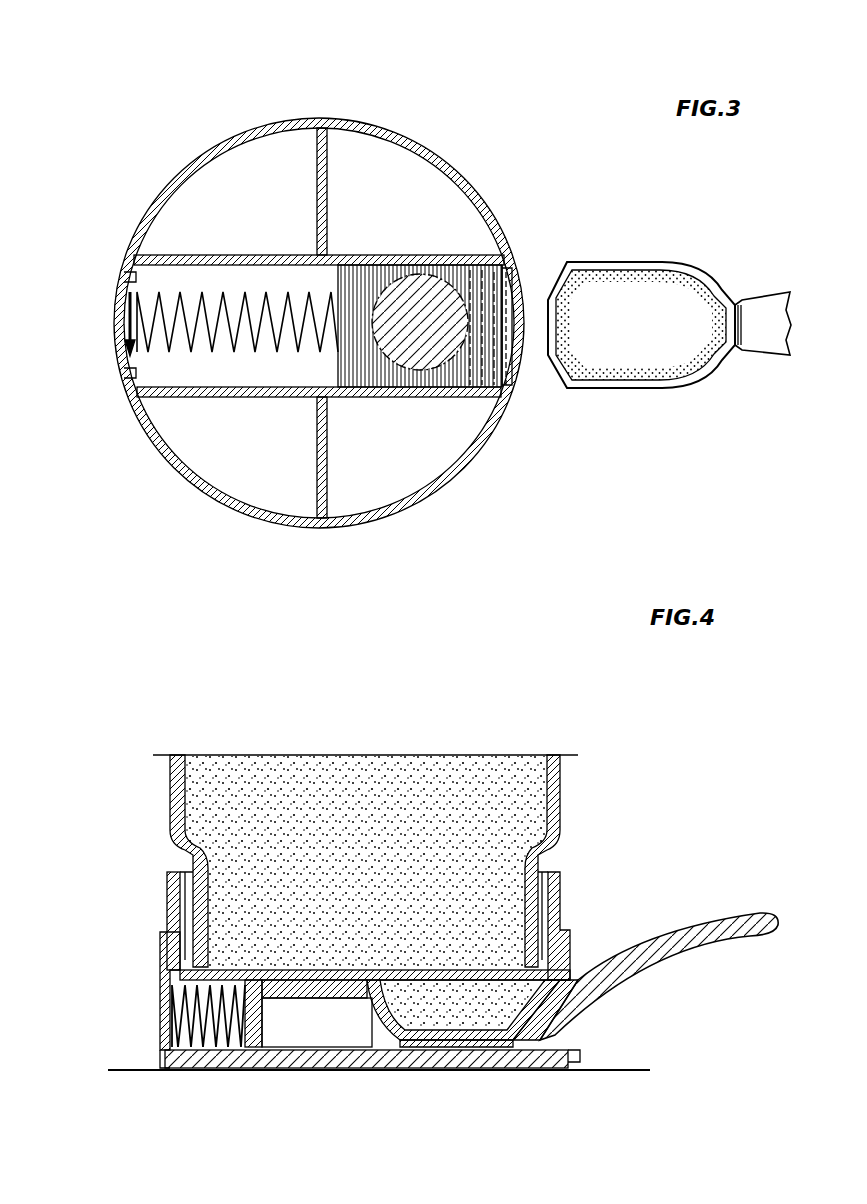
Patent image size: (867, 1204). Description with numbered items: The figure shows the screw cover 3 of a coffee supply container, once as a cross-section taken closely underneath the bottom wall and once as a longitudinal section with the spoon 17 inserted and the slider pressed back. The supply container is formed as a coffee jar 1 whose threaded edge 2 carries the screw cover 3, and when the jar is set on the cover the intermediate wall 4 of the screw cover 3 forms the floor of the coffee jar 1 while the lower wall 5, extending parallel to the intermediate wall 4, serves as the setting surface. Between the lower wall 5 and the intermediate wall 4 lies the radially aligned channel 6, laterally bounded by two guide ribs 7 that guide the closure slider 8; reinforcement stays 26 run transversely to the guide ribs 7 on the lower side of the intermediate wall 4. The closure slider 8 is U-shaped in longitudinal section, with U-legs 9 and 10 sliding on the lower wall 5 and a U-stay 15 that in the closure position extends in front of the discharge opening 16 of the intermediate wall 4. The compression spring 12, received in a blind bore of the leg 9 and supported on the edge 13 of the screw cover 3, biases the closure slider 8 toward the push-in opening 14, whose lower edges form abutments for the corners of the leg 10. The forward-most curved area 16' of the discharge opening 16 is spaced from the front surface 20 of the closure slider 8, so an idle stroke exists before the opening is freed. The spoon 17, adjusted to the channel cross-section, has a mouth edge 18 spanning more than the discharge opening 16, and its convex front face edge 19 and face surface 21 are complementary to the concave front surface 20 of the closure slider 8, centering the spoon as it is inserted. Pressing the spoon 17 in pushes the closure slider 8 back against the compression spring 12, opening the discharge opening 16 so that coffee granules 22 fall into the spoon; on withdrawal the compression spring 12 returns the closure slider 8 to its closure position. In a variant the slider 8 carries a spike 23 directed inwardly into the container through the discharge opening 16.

In FIG. 4, the coffee jar 1 is at (170, 785).
In FIG. 4, the edge 2 is at (185, 895).
In FIG. 3, the screw cover 3 is at (448, 172).
In FIG. 4, the screw cover 3 is at (160, 940).
In FIG. 4, the intermediate wall 4 is at (305, 980).
In FIG. 3, the lower wall 5 is at (230, 180).
In FIG. 4, the lower wall 5 is at (372, 1000).
In FIG. 3, the channel 6 is at (176, 280).
In FIG. 4, the channel 6 is at (198, 1045).
In FIG. 3, the guide ribs 7 is at (270, 255).
In FIG. 4, the guide ribs 7 is at (222, 1047).
In FIG. 3, the closure slider 8 is at (408, 348).
In FIG. 4, the closure slider 8 is at (337, 1010).
In FIG. 4, the U-leg 9 is at (260, 1000).
In FIG. 4, the U-leg 10 is at (400, 1050).
In FIG. 3, the compression spring 12 is at (225, 345).
In FIG. 4, the compression spring 12 is at (185, 1016).
In FIG. 3, the edge 13 is at (126, 312).
In FIG. 4, the edge 13 is at (160, 990).
In FIG. 3, the push-in opening 14 is at (506, 296).
In FIG. 4, the push-in opening 14 is at (560, 1028).
In FIG. 3, the U-stay 15 is at (455, 397).
In FIG. 3, the discharge opening 16 is at (501, 249).
In FIG. 4, the discharge opening 16 is at (659, 942).
In FIG. 3, the forward-most curved area 16' is at (545, 402).
In FIG. 3, the spoon 17 is at (683, 400).
In FIG. 4, the spoon 17 is at (432, 1047).
In FIG. 3, the mouth edge 18 is at (645, 263).
In FIG. 3, the front face edge 19 is at (590, 270).
In FIG. 4, the front face edge 19 is at (378, 978).
In FIG. 3, the front surface 20 is at (487, 310).
In FIG. 4, the front surface 20 is at (372, 978).
In FIG. 4, the face surface 21 is at (480, 1050).
In FIG. 4, the coffee granules 22 is at (480, 822).
In FIG. 3, the spike 23 is at (668, 305).
In FIG. 4, the spike 23 is at (530, 1055).
In FIG. 3, the reinforcement stays 26 is at (332, 130).